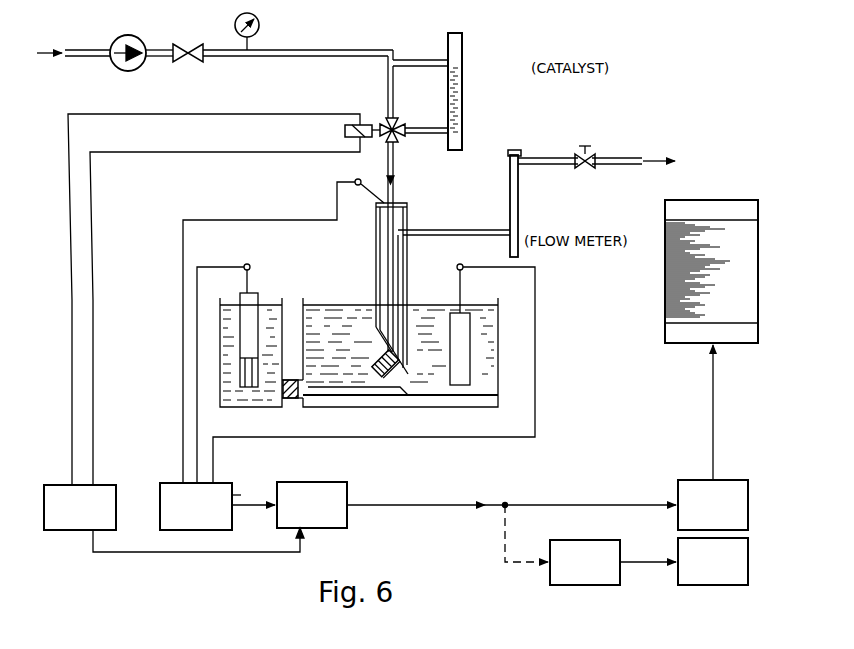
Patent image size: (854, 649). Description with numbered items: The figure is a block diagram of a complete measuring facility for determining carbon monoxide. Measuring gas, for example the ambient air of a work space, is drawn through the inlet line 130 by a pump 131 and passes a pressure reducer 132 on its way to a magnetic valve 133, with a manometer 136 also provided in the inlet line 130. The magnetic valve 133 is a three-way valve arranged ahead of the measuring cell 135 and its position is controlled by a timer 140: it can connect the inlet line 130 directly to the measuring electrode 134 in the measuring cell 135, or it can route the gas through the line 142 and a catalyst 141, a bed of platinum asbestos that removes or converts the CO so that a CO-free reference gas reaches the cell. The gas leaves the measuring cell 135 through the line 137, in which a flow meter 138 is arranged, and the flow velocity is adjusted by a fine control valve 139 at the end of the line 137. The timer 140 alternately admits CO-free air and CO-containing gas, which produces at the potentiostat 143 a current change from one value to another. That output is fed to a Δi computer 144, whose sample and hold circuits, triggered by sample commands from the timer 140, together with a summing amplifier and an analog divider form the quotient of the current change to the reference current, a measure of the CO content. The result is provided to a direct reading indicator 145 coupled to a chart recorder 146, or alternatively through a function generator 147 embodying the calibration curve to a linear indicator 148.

The inlet line 130 is at (158, 48).
The pump 131 is at (120, 67).
The pressure reducer 132 is at (191, 45).
The magnetic valve 133 is at (398, 138).
The measuring electrode 134 is at (376, 252).
The measuring cell 135 is at (483, 408).
The manometer 136 is at (259, 27).
The line 137 is at (426, 238).
The flow meter 138 is at (519, 212).
The fine control valve 139 is at (580, 168).
The timer 140 is at (72, 530).
The catalyst 141 is at (462, 71).
The line 142 is at (421, 66).
The potentiostat 143 is at (195, 530).
The Δi computer 144 is at (305, 528).
The direct reading indicator 145 is at (748, 500).
The chart recorder 146 is at (665, 290).
The function generator 147 is at (575, 585).
The linear indicator 148 is at (748, 558).